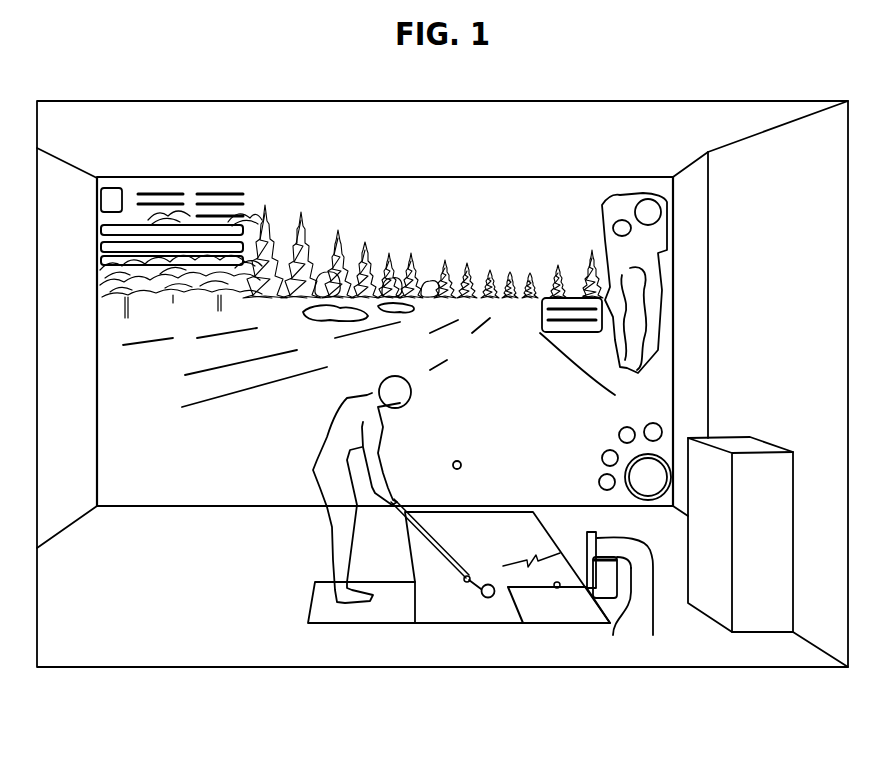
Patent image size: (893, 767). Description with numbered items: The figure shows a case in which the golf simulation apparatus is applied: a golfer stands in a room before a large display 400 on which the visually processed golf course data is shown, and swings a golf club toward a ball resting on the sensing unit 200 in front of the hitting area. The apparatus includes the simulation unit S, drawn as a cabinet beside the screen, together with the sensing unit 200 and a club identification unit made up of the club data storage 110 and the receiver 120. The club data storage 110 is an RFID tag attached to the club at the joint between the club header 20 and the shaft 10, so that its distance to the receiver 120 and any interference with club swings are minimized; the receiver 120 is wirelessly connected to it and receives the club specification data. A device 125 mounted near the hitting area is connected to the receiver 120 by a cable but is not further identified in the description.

The display 400 is at (193, 487).
The shaft 10 is at (407, 578).
The club data storage 110 is at (466, 580).
The club header 20 is at (489, 594).
The sensing unit 200 is at (537, 588).
The sensing device 125 is at (613, 635).
The receiver 120 is at (653, 635).
The simulation unit S is at (757, 617).